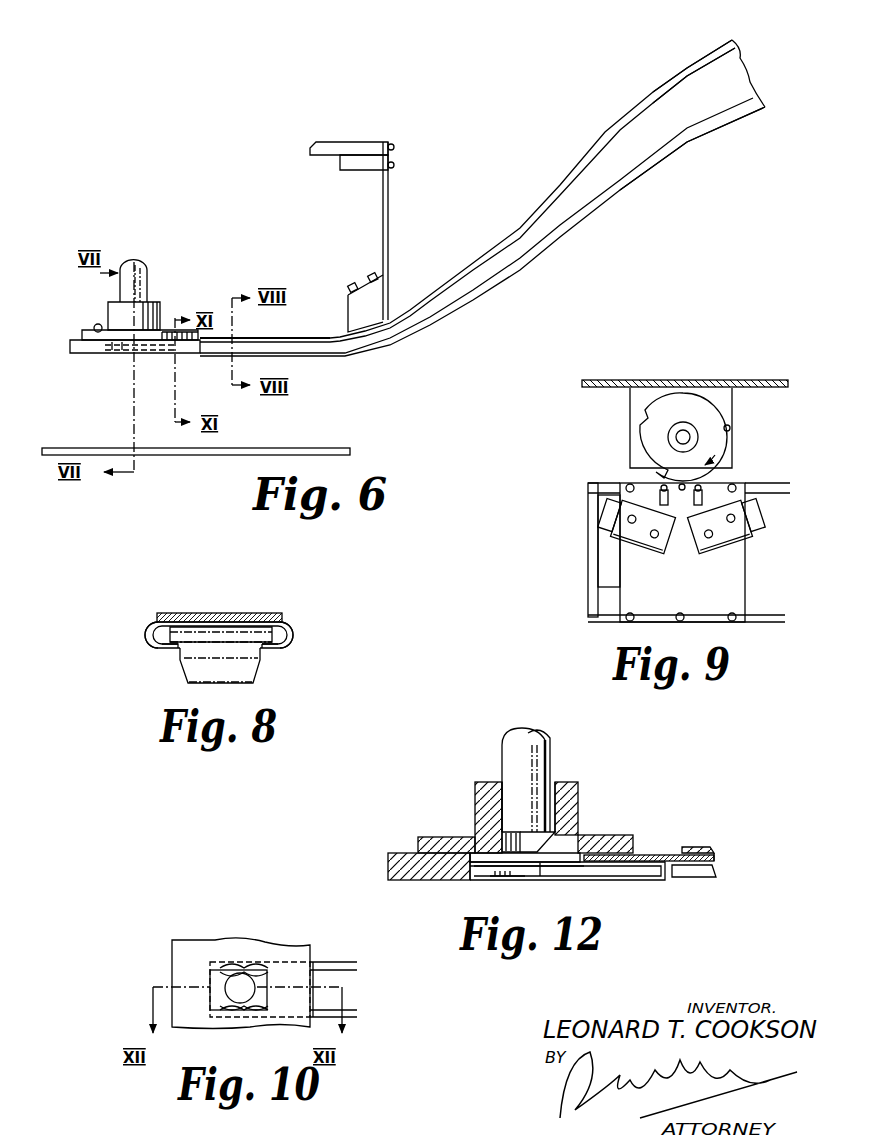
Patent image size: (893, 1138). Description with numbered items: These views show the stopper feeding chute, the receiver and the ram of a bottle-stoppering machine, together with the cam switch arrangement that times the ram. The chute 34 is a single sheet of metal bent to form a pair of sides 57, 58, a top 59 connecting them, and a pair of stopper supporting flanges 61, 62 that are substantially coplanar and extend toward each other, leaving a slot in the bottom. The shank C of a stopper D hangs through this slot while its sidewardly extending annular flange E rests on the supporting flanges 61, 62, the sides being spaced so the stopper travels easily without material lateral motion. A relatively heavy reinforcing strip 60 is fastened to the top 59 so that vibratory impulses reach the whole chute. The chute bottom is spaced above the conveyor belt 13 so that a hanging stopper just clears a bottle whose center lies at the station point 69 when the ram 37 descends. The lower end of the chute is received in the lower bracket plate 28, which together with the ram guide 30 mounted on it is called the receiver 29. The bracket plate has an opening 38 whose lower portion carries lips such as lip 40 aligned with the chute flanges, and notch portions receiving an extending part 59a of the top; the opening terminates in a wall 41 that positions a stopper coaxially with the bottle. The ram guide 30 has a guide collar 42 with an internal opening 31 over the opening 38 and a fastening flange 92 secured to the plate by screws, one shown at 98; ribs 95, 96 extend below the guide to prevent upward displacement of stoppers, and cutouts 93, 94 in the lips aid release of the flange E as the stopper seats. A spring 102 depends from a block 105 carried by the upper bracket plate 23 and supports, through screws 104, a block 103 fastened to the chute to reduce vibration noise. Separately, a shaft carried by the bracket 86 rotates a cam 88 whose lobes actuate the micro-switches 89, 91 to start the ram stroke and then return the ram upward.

In FIG. 6, the conveyor belt 13 is at (266, 448).
In FIG. 6, the upper bracket plate 23 is at (318, 151).
In FIG. 6, the lower bracket plate 28 is at (92, 353).
In FIG. 12, the lower bracket plate 28 is at (405, 853).
In FIG. 10, the lower bracket plate 28 is at (182, 952).
In FIG. 12, the receiver 29 is at (635, 815).
In FIG. 6, the ram guide 30 is at (160, 311).
In FIG. 12, the ram guide 30 is at (588, 786).
In FIG. 12, the internal opening 31 is at (553, 834).
In FIG. 10, the internal opening 31 is at (232, 983).
In FIG. 6, the chute 34 is at (303, 348).
In FIG. 8, the chute 34 is at (296, 622).
In FIG. 12, the chute 34 is at (725, 868).
In FIG. 10, the chute 34 is at (338, 962).
In FIG. 6, the ram 37 is at (147, 265).
In FIG. 12, the ram 37 is at (508, 745).
In FIG. 12, the opening 38 is at (588, 866).
In FIG. 10, the opening 38 is at (284, 968).
In FIG. 12, the lip 40 is at (633, 876).
In FIG. 6, the wall 41 is at (118, 351).
In FIG. 12, the wall 41 is at (475, 878).
In FIG. 10, the wall 41 is at (213, 995).
In FIG. 12, the guide collar 42 is at (552, 785).
In FIG. 8, the side 57 is at (148, 640).
In FIG. 8, the side 58 is at (292, 638).
In FIG. 6, the top 59 is at (735, 75).
In FIG. 8, the top 59 is at (270, 622).
In FIG. 12, the top 59 is at (717, 858).
In FIG. 12, the extending part 59a is at (657, 855).
In FIG. 6, the reinforcing strip 60 is at (248, 338).
In FIG. 8, the reinforcing strip 60 is at (237, 612).
In FIG. 12, the reinforcing strip 60 is at (704, 847).
In FIG. 6, the stopper supporting flange 61 is at (734, 40).
In FIG. 8, the stopper supporting flange 61 is at (266, 646).
In FIG. 6, the stopper supporting flange 62 is at (754, 106).
In FIG. 8, the stopper supporting flange 62 is at (180, 646).
In FIG. 12, the stopper supporting flange 62 is at (684, 878).
In FIG. 6, the station point 69 is at (131, 446).
In FIG. 9, the bracket 86 is at (630, 400).
In FIG. 9, the cam 88 is at (720, 412).
In FIG. 9, the micro-switch 89 is at (650, 553).
In FIG. 9, the micro-switch 91 is at (715, 555).
In FIG. 6, the fastening flange 92 is at (82, 335).
In FIG. 12, the fastening flange 92 is at (445, 837).
In FIG. 10, the cutout 93 is at (282, 968).
In FIG. 12, the cutout 94 is at (528, 876).
In FIG. 10, the cutout 94 is at (213, 1008).
In FIG. 10, the rib 95 is at (210, 970).
In FIG. 12, the rib 96 is at (548, 864).
In FIG. 10, the rib 96 is at (267, 1008).
In FIG. 6, the screw / cam lobe 98 is at (97, 324).
In FIG. 9, the screw / cam lobe 98 is at (730, 427).
In FIG. 6, the spring 102 is at (388, 230).
In FIG. 6, the block 103 is at (378, 295).
In FIG. 6, the screws 104 is at (371, 276).
In FIG. 6, the block 105 is at (356, 165).
In FIG. 8, the shank C is at (240, 668).
In FIG. 8, the stopper D is at (188, 684).
In FIG. 8, the annular flange E is at (175, 633).